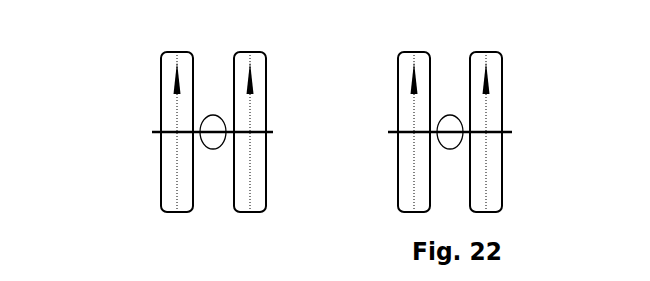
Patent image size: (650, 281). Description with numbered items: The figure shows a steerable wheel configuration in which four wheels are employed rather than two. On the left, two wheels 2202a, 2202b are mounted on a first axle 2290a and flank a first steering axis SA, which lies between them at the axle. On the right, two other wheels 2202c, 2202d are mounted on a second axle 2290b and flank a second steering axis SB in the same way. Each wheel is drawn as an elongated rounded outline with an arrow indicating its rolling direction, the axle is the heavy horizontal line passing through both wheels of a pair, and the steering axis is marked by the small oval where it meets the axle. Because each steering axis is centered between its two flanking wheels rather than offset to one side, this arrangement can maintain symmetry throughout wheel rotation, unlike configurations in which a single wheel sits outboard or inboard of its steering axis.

The wheel 2202a is at (161, 78).
The wheel 2202b is at (246, 52).
The wheel 2202c is at (414, 52).
The wheel 2202d is at (478, 52).
The first axle 2290a is at (152, 132).
The second axle 2290b is at (388, 132).
The first steering axis SA is at (198, 131).
The second steering axis SB is at (463, 133).